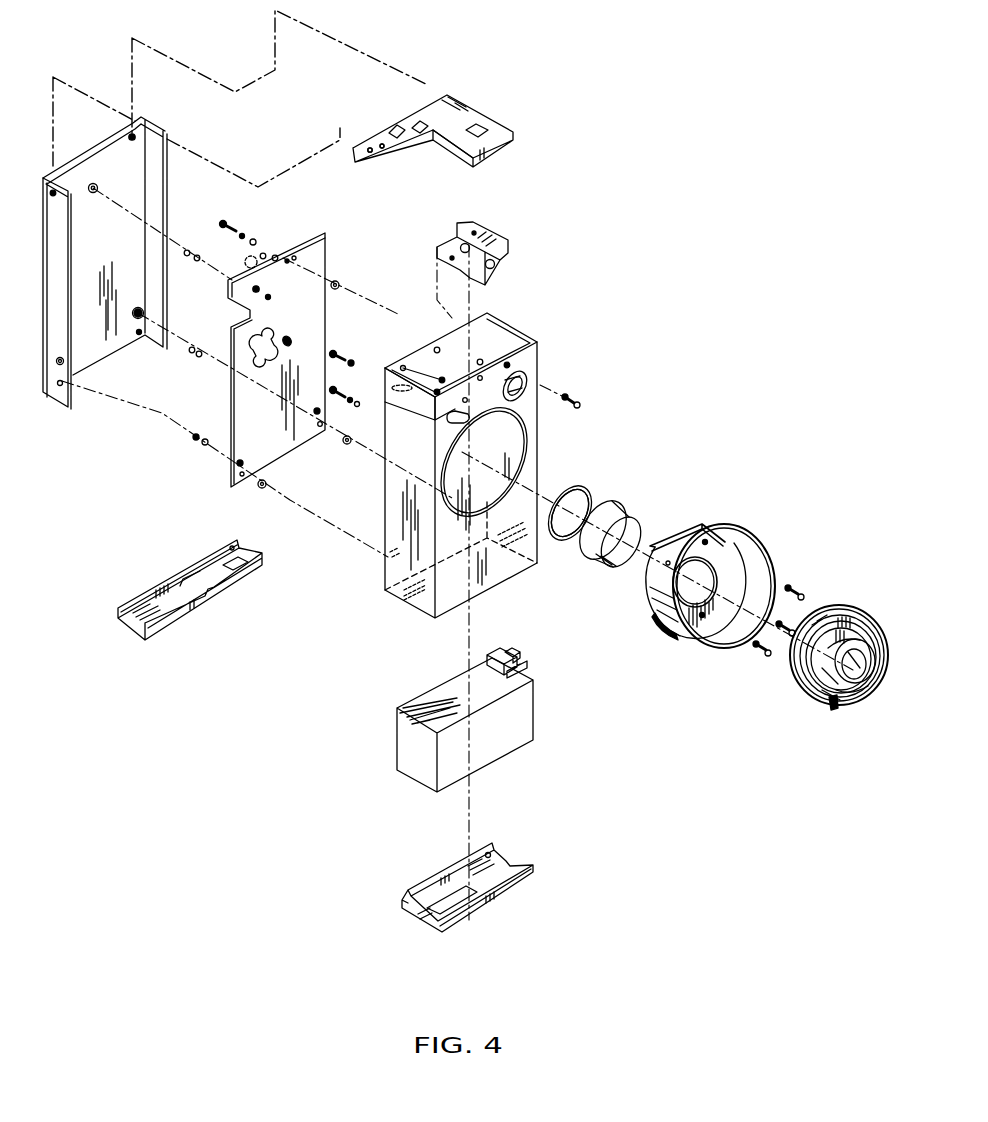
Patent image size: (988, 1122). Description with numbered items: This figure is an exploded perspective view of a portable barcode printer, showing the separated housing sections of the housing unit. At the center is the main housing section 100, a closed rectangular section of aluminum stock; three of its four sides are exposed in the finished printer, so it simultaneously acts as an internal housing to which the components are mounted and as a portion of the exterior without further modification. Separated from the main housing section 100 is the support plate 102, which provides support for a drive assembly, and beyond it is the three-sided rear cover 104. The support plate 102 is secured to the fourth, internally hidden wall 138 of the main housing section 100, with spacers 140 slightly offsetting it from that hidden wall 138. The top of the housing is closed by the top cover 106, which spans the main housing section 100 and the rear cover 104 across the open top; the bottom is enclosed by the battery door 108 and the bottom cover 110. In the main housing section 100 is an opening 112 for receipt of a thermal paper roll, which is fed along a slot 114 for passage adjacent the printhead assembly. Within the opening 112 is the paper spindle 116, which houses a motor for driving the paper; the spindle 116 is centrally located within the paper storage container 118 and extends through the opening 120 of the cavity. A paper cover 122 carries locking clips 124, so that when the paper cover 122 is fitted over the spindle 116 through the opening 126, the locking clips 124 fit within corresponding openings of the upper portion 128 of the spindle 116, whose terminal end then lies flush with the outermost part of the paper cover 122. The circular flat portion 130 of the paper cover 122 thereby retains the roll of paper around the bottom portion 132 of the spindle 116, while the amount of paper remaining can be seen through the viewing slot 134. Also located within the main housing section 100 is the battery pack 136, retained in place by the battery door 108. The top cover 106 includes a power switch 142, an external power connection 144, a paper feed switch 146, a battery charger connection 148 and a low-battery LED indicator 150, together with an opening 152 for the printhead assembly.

The main housing section 100 is at (524, 333).
The support plate 102 is at (287, 440).
The rear cover 104 is at (122, 254).
The top cover 106 is at (497, 118).
The battery door 108 is at (513, 888).
The bottom cover 110 is at (247, 575).
The opening 112 is at (517, 447).
The slot 114 is at (466, 424).
The paper spindle 116 is at (563, 536).
The paper storage container 118 is at (732, 540).
The opening 120 is at (690, 600).
The paper cover 122 is at (833, 708).
The locking clips 124 is at (793, 667).
The opening 126 is at (860, 653).
The upper portion 128 is at (658, 566).
The circular flat portion 130 is at (820, 700).
The bottom portion 132 is at (580, 500).
The viewing slot 134 is at (810, 688).
The battery pack 136 is at (497, 749).
The hidden wall 138 is at (417, 352).
The spacers 140 is at (337, 282).
The power switch 142 is at (493, 140).
The external power connection 144 is at (422, 122).
The paper feed switch 146 is at (397, 122).
The battery charger connection 148 is at (380, 143).
The low-battery LED indicator 150 is at (367, 146).
The opening 152 is at (425, 145).